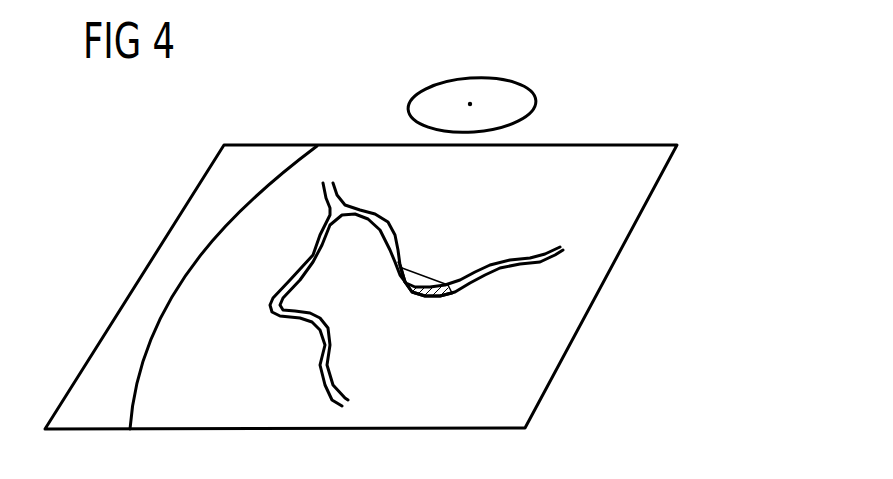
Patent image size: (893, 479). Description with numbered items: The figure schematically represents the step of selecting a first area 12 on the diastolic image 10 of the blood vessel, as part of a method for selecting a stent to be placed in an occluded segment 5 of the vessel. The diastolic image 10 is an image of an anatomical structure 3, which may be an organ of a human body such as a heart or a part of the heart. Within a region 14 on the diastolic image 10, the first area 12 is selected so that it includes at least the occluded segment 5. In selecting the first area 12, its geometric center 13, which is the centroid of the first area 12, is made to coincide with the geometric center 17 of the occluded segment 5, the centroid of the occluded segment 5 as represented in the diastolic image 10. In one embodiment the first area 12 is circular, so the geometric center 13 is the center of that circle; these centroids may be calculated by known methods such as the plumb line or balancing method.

The anatomical structure 3 is at (184, 314).
The occluded segment 5 is at (416, 265).
The diastolic image 10 is at (657, 183).
The first area 12 is at (536, 107).
The geometric center of the first area 13 is at (472, 103).
The region 14 is at (403, 297).
The geometric center of the occluded segment 17 is at (418, 294).